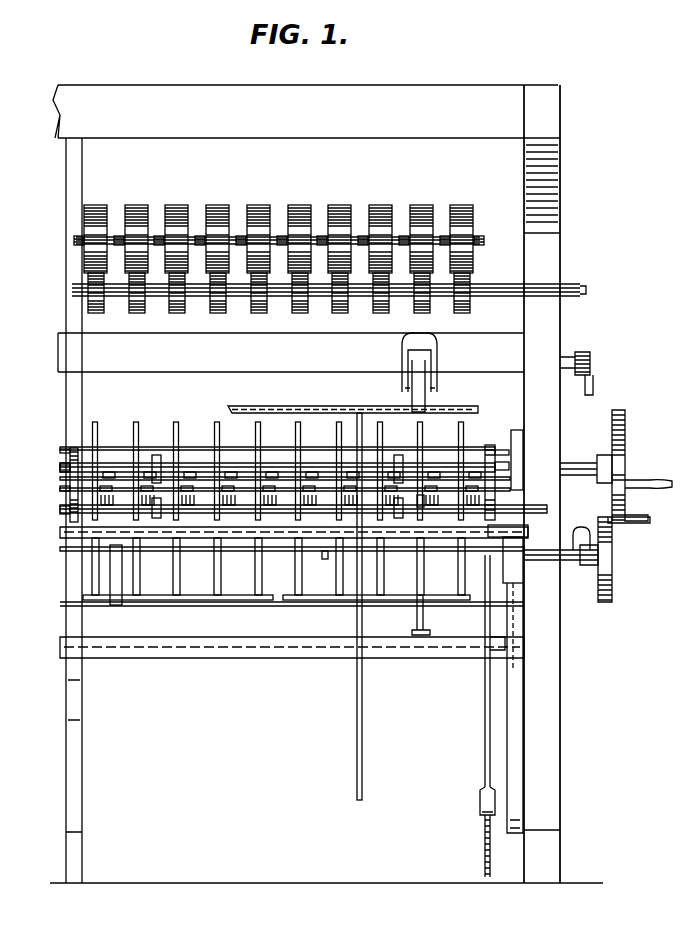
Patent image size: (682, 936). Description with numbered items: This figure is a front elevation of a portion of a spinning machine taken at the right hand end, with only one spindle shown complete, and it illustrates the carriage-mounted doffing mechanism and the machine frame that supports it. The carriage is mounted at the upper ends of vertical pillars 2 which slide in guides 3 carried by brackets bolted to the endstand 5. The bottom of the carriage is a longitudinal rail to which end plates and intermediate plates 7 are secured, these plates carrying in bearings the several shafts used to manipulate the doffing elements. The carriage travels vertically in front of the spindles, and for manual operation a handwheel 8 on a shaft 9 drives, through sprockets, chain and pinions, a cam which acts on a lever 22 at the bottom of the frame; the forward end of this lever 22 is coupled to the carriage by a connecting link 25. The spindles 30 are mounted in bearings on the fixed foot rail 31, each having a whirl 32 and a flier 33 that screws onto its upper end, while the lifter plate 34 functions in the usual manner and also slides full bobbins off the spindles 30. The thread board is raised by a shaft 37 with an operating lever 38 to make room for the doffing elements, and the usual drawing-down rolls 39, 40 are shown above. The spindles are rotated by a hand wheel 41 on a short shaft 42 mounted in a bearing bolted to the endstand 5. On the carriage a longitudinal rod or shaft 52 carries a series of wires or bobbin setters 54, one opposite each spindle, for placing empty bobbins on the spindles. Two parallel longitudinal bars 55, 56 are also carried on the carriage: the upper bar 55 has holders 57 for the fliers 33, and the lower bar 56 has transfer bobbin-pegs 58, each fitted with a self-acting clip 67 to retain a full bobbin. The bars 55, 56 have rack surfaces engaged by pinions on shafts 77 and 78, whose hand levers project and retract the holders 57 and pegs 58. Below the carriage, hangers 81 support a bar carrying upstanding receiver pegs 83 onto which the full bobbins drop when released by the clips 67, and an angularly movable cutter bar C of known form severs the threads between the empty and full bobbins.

The vertical pillars 2 is at (520, 722).
The guides 3 is at (523, 574).
The endstand 5 is at (542, 484).
The end plates and intermediate plates 7 is at (72, 448).
The handwheel 8 is at (612, 418).
The shaft 9 is at (576, 463).
The lever 22 is at (485, 846).
The connecting link 25 is at (485, 698).
The spindles 30 is at (417, 616).
The foot rail 31 is at (306, 656).
The whirl 32 is at (425, 508).
The flier 33 is at (432, 350).
The lifter plate 34 is at (462, 406).
The shaft 37 is at (568, 358).
The operating lever 38 is at (593, 388).
The drawing-down rolls 39 is at (261, 313).
The drawing-down rolls 40 is at (259, 206).
The hand wheel 41 is at (612, 580).
The short shaft 42 is at (570, 565).
The longitudinal rod or shaft 52 is at (66, 448).
The wires or bobbin setters 54 is at (136, 422).
The upper bar 55 is at (60, 468).
The lower bar 56 is at (60, 489).
The holders 57 is at (338, 472).
The transfer bobbin-pegs 58 is at (215, 520).
The self-acting clip 67 is at (255, 500).
The shaft 77 is at (60, 451).
The shaft 78 is at (60, 510).
The hangers 81 is at (440, 590).
The receiver pegs 83 is at (165, 578).
The cutter bar C is at (329, 551).